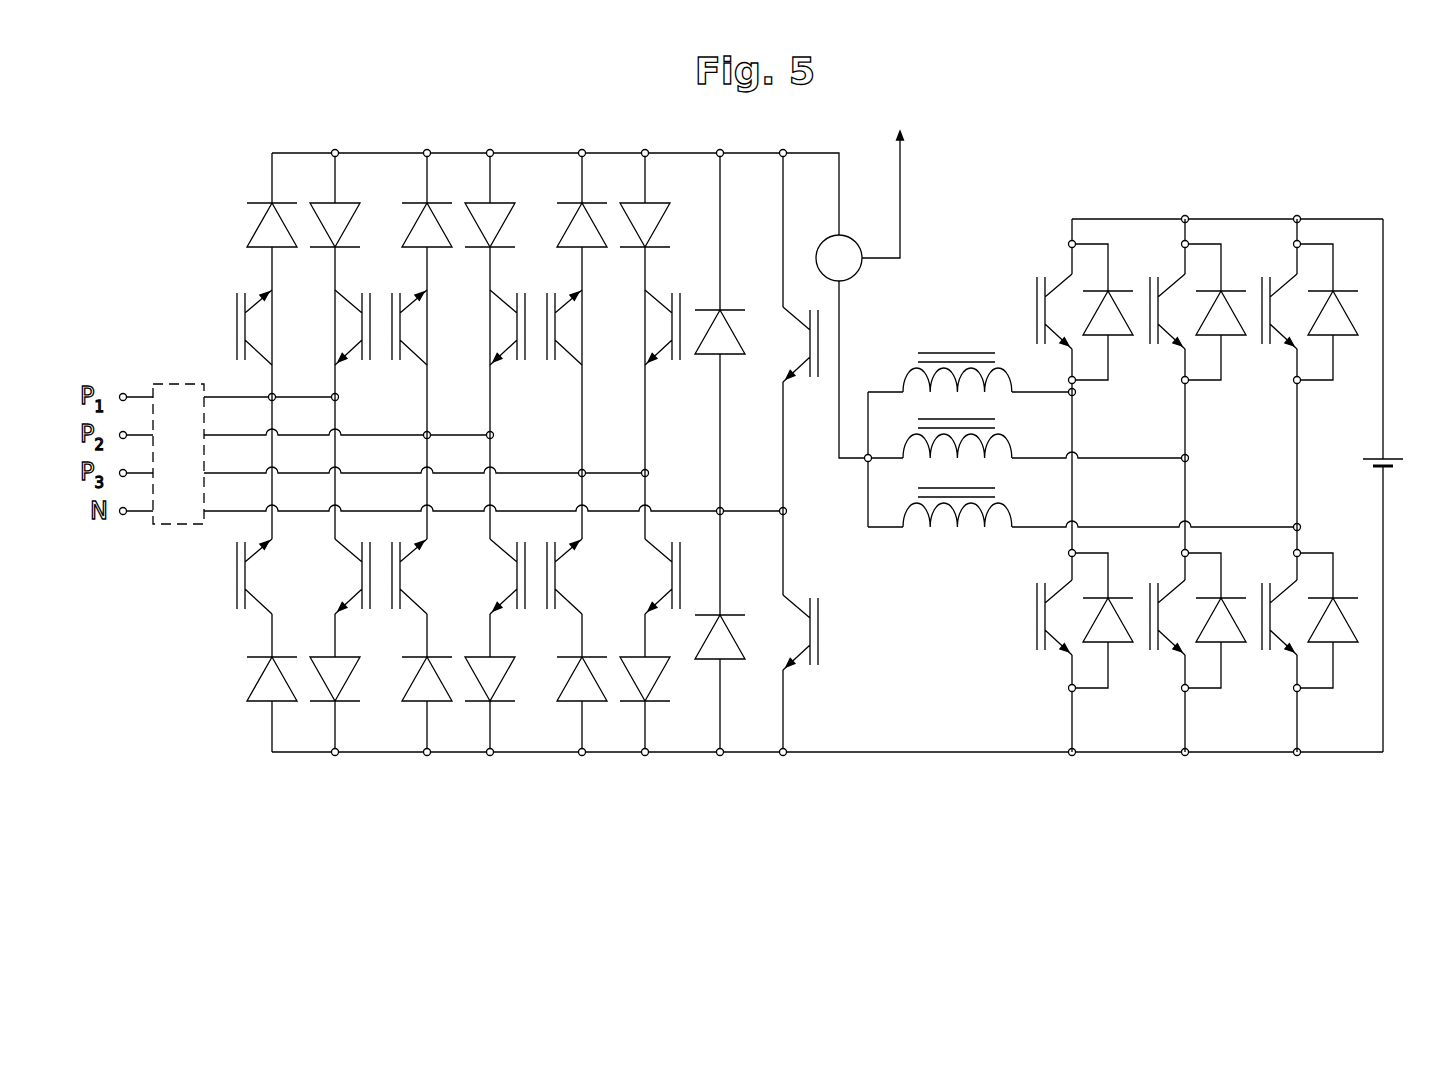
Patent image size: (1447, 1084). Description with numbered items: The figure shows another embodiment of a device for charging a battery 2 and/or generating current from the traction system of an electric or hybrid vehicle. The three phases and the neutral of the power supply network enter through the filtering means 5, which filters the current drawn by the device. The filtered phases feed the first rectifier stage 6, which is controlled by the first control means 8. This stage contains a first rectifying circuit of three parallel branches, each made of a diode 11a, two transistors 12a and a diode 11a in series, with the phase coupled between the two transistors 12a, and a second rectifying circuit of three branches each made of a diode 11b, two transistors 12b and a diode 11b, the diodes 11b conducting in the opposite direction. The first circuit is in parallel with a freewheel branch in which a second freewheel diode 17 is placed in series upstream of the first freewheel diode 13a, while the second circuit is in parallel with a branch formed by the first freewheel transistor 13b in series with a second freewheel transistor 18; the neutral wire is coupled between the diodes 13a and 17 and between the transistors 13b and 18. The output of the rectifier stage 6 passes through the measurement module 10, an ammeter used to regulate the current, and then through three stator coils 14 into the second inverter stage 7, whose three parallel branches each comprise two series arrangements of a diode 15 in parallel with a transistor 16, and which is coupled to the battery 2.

The battery 2 is at (1407, 488).
The filtering means 5 is at (177, 384).
The first rectifier stage 6 is at (522, 128).
The second inverter stage 7 is at (1230, 191).
The first control means 8 is at (884, 181).
The measurement module 10 is at (856, 275).
The diode 11a is at (285, 248).
The diode 11b is at (328, 203).
The transistor 12a is at (245, 323).
The transistor 12b is at (362, 330).
The first freewheel diode 13a is at (730, 355).
The first freewheel transistor 13b is at (810, 345).
The stator coil 14 is at (896, 372).
The diode 15 is at (1118, 336).
The transistor 16 is at (1036, 279).
The second freewheel diode 17 is at (730, 660).
The second freewheel transistor 18 is at (810, 645).